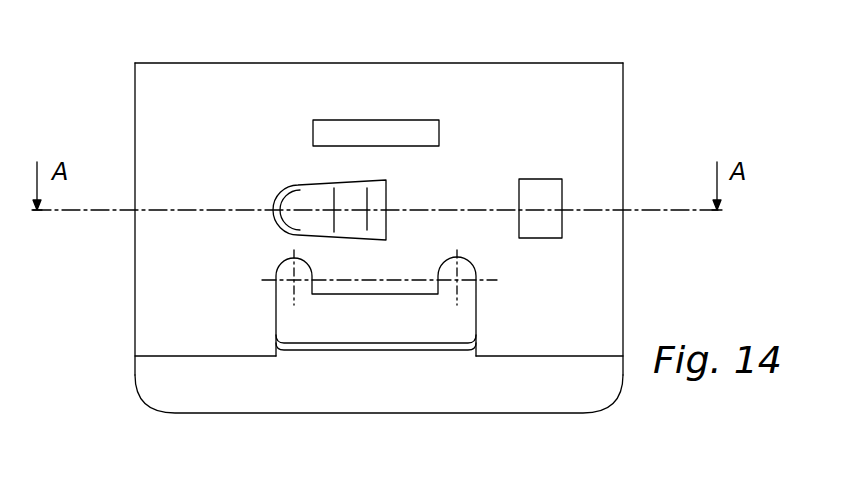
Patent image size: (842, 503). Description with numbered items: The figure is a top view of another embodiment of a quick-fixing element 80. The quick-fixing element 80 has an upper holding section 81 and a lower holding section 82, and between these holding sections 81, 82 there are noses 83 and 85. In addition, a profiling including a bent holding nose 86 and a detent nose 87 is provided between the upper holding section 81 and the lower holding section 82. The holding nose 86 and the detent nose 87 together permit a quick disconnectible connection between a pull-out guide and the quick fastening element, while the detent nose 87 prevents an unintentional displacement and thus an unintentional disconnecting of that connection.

The quick-fixing element 80 is at (588, 114).
The upper holding section 81 is at (230, 72).
The lower holding section 82 is at (277, 392).
The nose 83 is at (340, 326).
The nose 85 is at (393, 128).
The bent holding nose 86 is at (318, 198).
The detent nose 87 is at (543, 230).